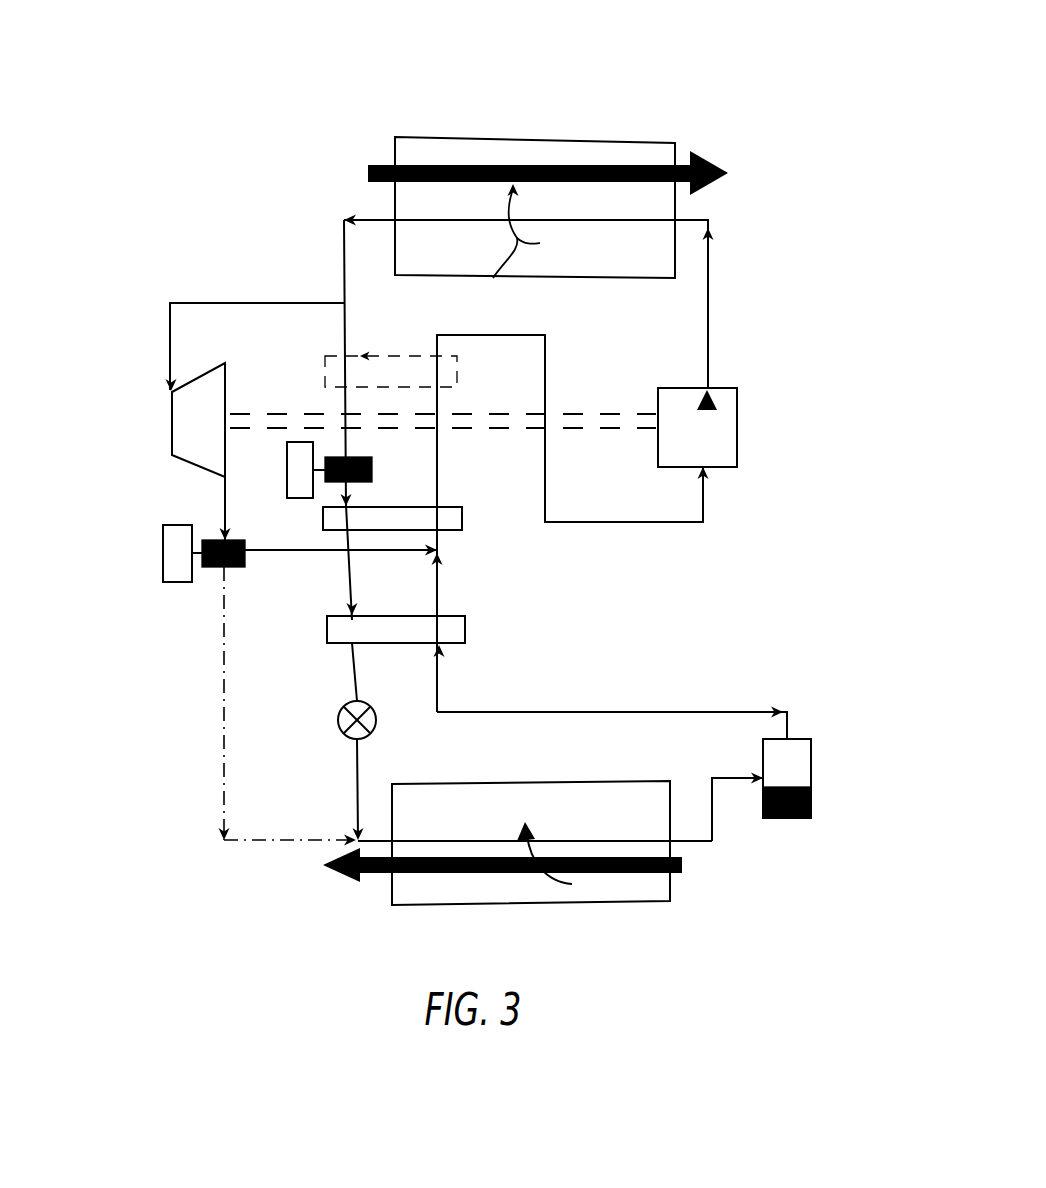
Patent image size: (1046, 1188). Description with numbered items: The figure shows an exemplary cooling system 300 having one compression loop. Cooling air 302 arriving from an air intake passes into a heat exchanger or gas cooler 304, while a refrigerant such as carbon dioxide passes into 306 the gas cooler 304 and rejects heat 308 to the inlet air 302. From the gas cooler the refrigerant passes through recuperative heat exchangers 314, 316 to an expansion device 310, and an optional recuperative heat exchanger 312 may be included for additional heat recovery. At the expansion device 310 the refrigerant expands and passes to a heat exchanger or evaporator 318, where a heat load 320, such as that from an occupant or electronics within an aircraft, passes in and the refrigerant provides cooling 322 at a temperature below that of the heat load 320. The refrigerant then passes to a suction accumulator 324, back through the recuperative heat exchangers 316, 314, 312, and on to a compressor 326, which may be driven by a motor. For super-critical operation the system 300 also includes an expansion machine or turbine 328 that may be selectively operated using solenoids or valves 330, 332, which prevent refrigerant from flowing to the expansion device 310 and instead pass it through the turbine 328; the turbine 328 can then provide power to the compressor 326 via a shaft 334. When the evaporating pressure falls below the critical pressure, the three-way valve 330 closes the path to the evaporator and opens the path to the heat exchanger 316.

The cooling system 300 is at (773, 112).
The cooling air 302 is at (458, 162).
The heat exchanger or gas cooler 304 is at (585, 143).
The refrigerant passage into heat exchanger 306 is at (607, 222).
The rejected heat 308 is at (493, 278).
The expansion device 310 is at (338, 722).
The optional recuperative heat exchanger 312 is at (325, 356).
The recuperative heat exchanger 314 is at (455, 506).
The recuperative heat exchanger 316 is at (465, 630).
The heat exchanger or evaporator 318 is at (543, 783).
The heat load 320 is at (612, 872).
The cooling 322 is at (566, 884).
The suction accumulator 324 is at (813, 766).
The compressor 326 is at (738, 425).
The expansion machine or turbine 328 is at (185, 467).
The solenoid or three-way valve 330 is at (167, 582).
The solenoid or valve 332 is at (287, 480).
The shaft 334 is at (576, 414).